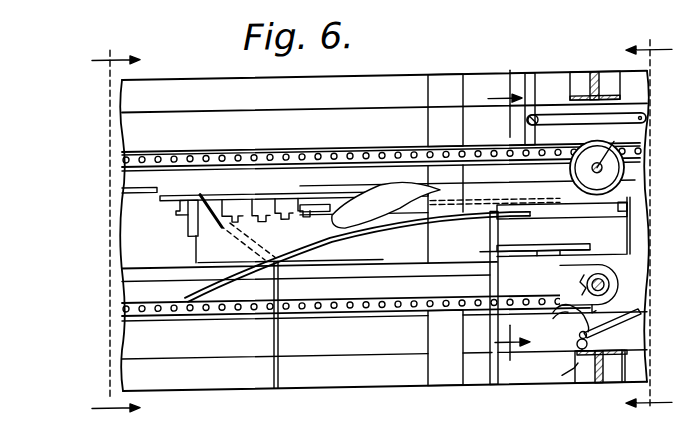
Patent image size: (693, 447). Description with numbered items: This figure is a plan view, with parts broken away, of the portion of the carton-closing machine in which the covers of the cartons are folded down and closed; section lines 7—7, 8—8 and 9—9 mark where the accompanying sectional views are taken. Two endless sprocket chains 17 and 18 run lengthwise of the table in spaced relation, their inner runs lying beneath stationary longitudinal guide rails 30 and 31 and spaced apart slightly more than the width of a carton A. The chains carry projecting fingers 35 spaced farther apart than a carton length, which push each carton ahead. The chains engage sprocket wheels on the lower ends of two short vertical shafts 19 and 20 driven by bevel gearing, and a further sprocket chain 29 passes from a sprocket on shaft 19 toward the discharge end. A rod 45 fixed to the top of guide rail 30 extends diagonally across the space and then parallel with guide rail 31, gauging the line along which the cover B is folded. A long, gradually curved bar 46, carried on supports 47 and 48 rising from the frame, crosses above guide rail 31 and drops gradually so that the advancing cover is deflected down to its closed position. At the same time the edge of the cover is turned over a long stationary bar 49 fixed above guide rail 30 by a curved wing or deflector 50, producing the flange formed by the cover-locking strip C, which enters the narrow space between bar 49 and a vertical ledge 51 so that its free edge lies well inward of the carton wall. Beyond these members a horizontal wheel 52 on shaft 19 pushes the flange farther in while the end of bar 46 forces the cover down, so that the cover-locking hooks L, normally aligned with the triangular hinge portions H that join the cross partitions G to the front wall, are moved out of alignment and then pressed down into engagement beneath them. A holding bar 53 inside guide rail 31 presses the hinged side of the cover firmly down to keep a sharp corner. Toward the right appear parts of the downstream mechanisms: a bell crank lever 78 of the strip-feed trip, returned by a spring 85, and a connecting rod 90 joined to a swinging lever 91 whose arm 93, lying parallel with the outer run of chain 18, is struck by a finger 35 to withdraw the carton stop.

The section line 7— 7 is at (116, 234).
The section line 8— 8 is at (649, 226).
The section line 9— 9 is at (509, 214).
The sprocket chain 17 is at (218, 162).
The sprocket chain 18 is at (127, 321).
The vertical shaft 19 is at (602, 158).
The vertical shaft 20 is at (582, 293).
The sprocket chain 29 is at (633, 158).
The guide rail 30 is at (133, 191).
The guide rail 31 is at (153, 282).
The projecting fingers 35 is at (177, 211).
The rod 45 is at (222, 206).
The bar 46 is at (420, 231).
The support 47 is at (272, 338).
The support 48 is at (490, 336).
The stationary bar 49 is at (332, 206).
The curved wing or deflector 50 is at (378, 204).
The vertical ledge 51 is at (480, 206).
The horizontal wheel 52 is at (625, 176).
The holding bar 53 is at (527, 252).
The bell crank lever 78 is at (510, 143).
The spring 85 is at (556, 123).
The connecting rod 90 is at (609, 330).
The swinging lever 91 is at (582, 367).
The arm 93 is at (574, 320).
The carton A is at (193, 228).
The cover B is at (282, 206).
The cover-locking strip C is at (322, 160).
The cross partitions G is at (285, 167).
The triangular hinge portions H is at (262, 167).
The cover-locking hooks L is at (294, 199).